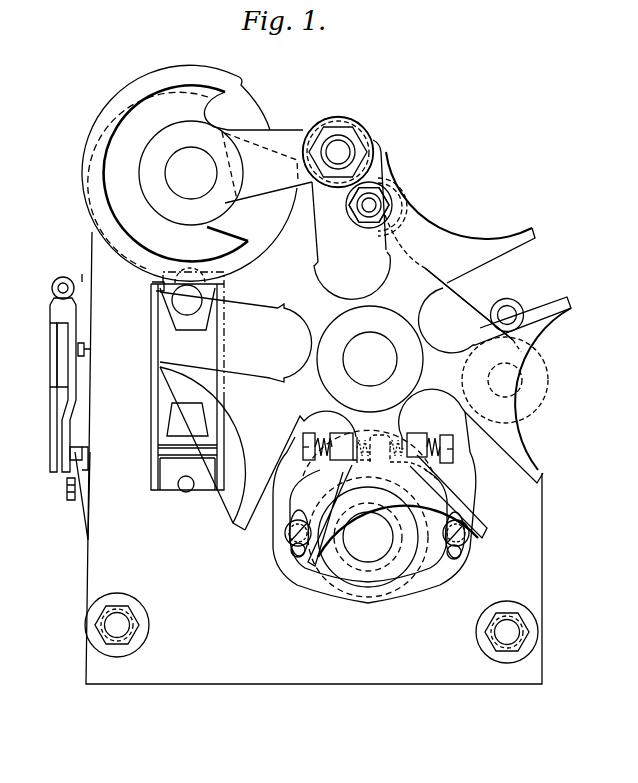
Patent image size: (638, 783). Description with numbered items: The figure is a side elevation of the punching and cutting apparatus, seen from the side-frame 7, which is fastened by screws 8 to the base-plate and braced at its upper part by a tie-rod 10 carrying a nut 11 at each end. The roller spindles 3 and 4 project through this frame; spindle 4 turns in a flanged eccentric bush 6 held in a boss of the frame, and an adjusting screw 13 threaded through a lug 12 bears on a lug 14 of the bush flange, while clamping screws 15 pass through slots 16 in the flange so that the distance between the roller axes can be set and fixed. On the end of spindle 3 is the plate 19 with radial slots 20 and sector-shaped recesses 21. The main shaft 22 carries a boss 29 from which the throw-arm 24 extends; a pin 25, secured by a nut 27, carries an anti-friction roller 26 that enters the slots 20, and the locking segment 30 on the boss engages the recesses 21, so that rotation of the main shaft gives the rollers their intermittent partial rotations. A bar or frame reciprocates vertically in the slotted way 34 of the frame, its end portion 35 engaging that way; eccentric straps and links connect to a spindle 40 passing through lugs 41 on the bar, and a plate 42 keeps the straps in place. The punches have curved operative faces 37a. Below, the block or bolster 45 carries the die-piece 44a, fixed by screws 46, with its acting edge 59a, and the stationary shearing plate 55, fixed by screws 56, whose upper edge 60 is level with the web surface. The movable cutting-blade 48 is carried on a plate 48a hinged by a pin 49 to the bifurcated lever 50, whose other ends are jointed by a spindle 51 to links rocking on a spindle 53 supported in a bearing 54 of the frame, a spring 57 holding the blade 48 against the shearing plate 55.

The spindle 3 is at (370, 359).
The spindle 4 is at (368, 537).
The flanged eccentric bush 6 is at (373, 597).
The side-frame 7 is at (314, 458).
The screw 8 is at (311, 628).
The tie-rod 10 is at (376, 207).
The nut 11 is at (358, 217).
The lug 12 is at (342, 433).
The adjusting screw 13 is at (322, 458).
The lug 14 is at (378, 442).
The clamping screw 15 is at (286, 533).
The slot 16 is at (296, 553).
The plate 19 is at (340, 307).
The radially disposed slot 20 is at (388, 250).
The sector-shaped recess 21 is at (283, 225).
The main shaft 22 is at (191, 173).
The throw-arm 24 is at (267, 166).
The pin 25 is at (338, 152).
The anti-friction roller 26 is at (373, 142).
The nut 27 is at (352, 142).
The boss 29 is at (191, 173).
The locking segment 30 is at (189, 173).
The slotted way 34 is at (214, 446).
The end portion of bar or frame 35 is at (187, 381).
The curved face of punch 37a is at (187, 419).
The spindle 40 is at (187, 299).
The lug 41 is at (152, 284).
The plate 42 is at (243, 100).
The die-piece 44a is at (187, 474).
The block or bolster 45 is at (88, 452).
The screw 46 is at (186, 490).
The cutting-blade 48 is at (62, 430).
The plate 48a is at (52, 387).
The pin 49 is at (62, 285).
The bifurcated lever 50 is at (474, 304).
The spindle 51 is at (513, 312).
The spindle 53 is at (518, 382).
The bearing 54 is at (523, 400).
The stationary blade or shearing plate 55 is at (83, 518).
The screw 56 is at (68, 497).
The spring 57 is at (87, 342).
The acting face or edge of die-piece 59a is at (160, 453).
The upper edge of stationary blade 60 is at (73, 453).